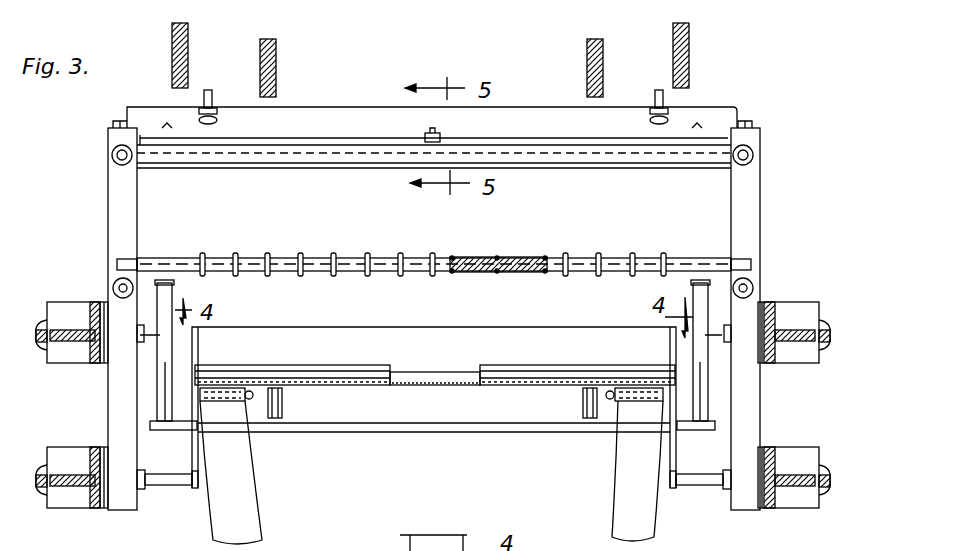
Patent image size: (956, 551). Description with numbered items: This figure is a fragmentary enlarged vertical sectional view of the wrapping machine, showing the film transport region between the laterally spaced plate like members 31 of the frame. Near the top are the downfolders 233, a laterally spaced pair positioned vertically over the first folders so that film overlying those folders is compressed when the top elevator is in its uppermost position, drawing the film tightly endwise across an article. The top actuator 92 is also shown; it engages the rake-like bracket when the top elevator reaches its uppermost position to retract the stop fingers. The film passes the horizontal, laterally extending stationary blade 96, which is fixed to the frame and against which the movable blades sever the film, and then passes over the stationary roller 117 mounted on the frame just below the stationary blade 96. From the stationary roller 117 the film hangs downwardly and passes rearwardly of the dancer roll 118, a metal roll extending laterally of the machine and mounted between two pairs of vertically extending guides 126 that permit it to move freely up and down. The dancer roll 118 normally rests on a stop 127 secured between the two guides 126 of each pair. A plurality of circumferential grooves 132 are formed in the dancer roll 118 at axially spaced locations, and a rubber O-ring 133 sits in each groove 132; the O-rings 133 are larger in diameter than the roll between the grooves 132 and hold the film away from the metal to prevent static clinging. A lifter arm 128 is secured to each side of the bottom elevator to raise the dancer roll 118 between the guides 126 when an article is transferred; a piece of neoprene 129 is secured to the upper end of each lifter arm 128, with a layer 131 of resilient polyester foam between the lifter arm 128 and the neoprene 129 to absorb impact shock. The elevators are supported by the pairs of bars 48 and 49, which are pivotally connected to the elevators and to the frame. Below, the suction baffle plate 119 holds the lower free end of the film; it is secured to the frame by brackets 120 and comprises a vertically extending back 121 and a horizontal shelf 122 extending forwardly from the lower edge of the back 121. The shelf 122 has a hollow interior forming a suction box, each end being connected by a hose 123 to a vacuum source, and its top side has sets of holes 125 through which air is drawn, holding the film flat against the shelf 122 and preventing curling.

The plate like member 31 is at (189, 48).
The downfolder 233 is at (284, 50).
The top actuator 92 is at (214, 118).
The stationary blade 96 is at (318, 136).
The stationary roller 117 is at (308, 165).
The vertically extending guide 126 is at (120, 196).
The stop 127 is at (112, 280).
The piece of neoprene 129 is at (172, 268).
The dancer roll 118 is at (312, 257).
The O-ring 133 is at (431, 256).
The circumferential groove 132 is at (520, 257).
The layer of resilient material 131 is at (175, 283).
The bar 49 is at (58, 310).
The bar 48 is at (80, 502).
The lifter arm 128 is at (165, 362).
The back 121 is at (378, 333).
The set of holes 125 is at (452, 370).
The suction baffle plate 119 is at (405, 388).
The shelf 122 is at (530, 376).
The hose 123 is at (245, 516).
The bracket 120 is at (193, 452).